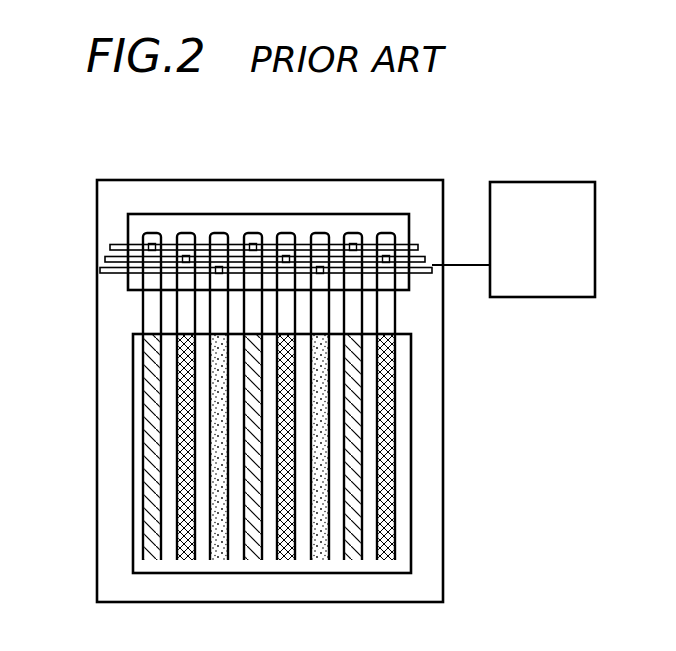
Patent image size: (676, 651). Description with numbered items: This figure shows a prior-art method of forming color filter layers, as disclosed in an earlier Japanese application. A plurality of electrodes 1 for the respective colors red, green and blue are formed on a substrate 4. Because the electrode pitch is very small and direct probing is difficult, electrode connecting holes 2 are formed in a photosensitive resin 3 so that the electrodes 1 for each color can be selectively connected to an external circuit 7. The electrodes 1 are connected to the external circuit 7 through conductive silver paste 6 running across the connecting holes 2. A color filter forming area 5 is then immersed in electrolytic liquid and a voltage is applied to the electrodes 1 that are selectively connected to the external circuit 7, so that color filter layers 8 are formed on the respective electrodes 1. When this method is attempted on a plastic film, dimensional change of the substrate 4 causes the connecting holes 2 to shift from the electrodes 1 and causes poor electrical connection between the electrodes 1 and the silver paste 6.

The electrodes 1 is at (150, 312).
The electrode connecting holes 2 is at (384, 238).
The photosensitive resin 3 is at (300, 228).
The substrate 4 is at (427, 442).
The color filter forming area 5 is at (402, 503).
The conductive silver paste 6 is at (422, 272).
The external circuit 7 is at (535, 202).
The color filter layers 8 is at (395, 538).